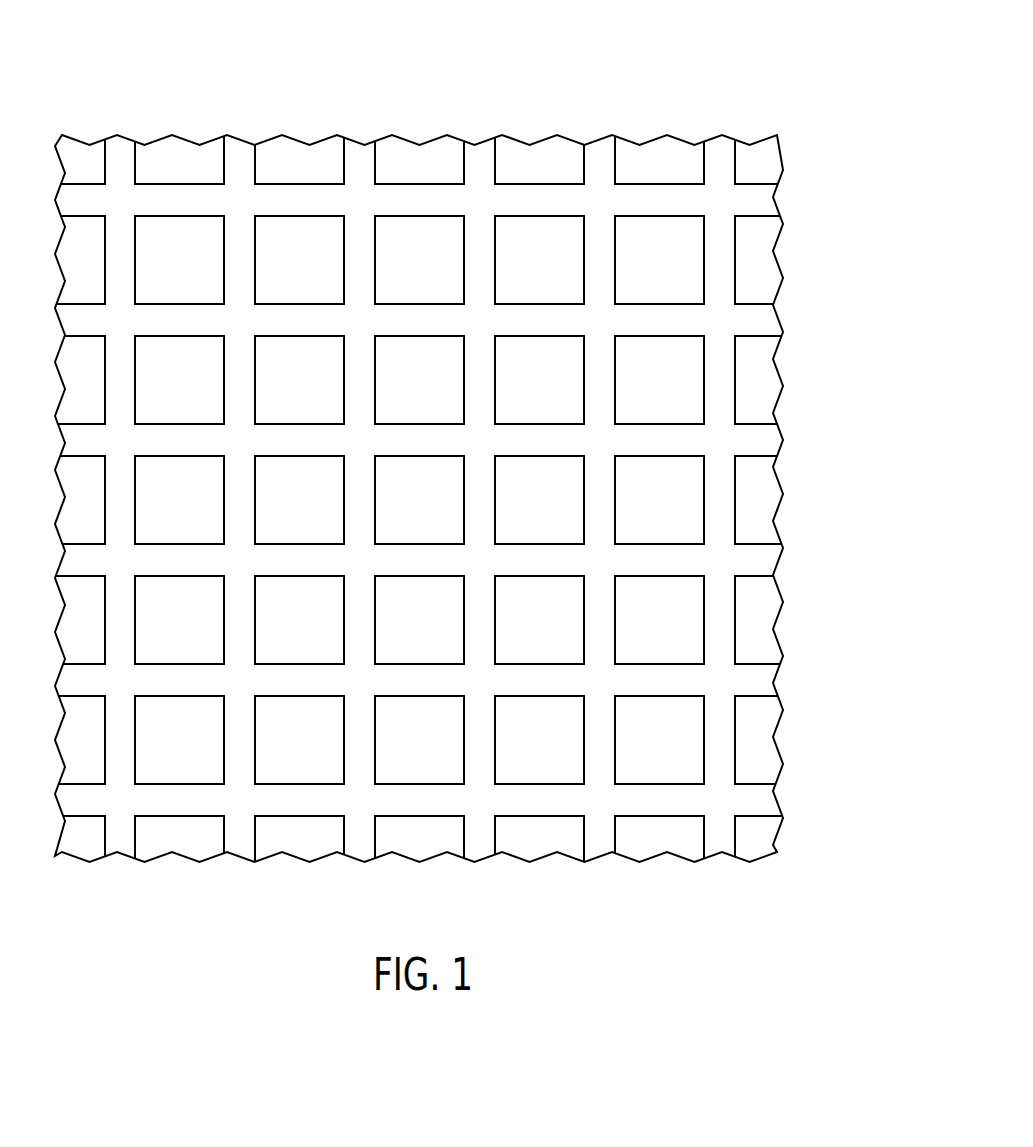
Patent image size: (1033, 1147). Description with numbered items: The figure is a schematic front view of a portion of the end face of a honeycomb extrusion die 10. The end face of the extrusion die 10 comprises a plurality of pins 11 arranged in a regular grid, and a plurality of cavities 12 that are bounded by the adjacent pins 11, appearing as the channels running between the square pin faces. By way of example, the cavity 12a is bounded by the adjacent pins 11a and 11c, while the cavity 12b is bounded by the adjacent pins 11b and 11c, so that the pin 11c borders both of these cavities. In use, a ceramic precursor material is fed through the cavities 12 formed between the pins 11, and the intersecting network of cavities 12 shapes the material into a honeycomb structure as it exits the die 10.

The honeycomb extrusion die 10 is at (690, 81).
The pins 11 is at (670, 768).
The pin 11a is at (688, 260).
The pin 11b is at (555, 392).
The pin 11c is at (688, 387).
The cavities 12 is at (597, 845).
The cavity 12a is at (688, 323).
The cavity 12b is at (603, 362).